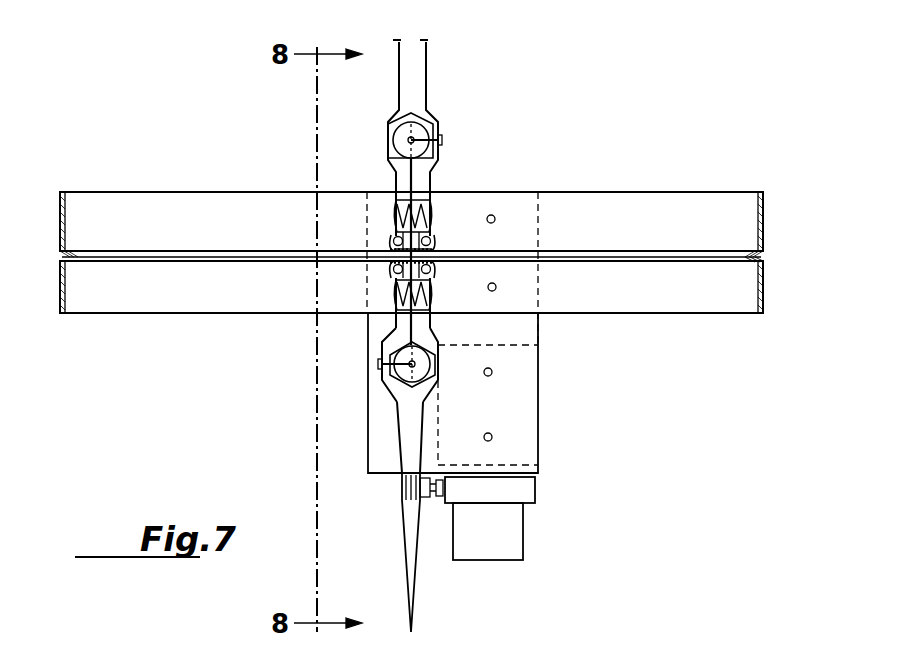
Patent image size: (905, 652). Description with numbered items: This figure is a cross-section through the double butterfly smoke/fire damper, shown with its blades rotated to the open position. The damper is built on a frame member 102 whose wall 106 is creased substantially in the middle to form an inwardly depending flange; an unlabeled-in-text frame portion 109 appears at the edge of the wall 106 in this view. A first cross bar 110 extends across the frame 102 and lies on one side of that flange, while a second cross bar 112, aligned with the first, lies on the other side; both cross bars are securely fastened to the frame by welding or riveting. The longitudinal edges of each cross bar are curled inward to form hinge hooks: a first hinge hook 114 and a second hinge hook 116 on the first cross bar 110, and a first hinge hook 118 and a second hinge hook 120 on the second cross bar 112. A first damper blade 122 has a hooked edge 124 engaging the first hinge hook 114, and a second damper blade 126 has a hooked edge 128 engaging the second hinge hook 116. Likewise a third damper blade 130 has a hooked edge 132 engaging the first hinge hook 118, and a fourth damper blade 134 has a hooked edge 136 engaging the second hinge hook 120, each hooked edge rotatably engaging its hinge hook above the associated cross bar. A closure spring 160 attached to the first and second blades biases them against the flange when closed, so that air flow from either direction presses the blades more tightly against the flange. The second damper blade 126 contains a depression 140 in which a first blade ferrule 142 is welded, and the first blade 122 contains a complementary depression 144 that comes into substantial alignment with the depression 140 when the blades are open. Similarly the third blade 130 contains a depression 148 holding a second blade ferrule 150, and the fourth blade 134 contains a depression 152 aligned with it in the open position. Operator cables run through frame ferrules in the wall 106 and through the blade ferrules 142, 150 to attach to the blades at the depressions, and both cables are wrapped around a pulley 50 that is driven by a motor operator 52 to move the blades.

The pulley 50 is at (407, 492).
The motor operator 52 is at (512, 538).
The frame member 102 is at (765, 208).
The wall 106 is at (765, 230).
The lower panel flange 109 is at (763, 266).
The first cross bar 110 is at (392, 266).
The second cross bar 112 is at (432, 247).
The first hinge hook 114 is at (392, 278).
The second hinge hook 116 is at (433, 268).
The first hinge hook 118 is at (389, 243).
The second hinge hook 120 is at (429, 246).
The first damper blade 122 is at (398, 427).
The hooked edge 124 is at (393, 284).
The second damper blade 126 is at (423, 423).
The hooked edge 128 is at (430, 285).
The third damper blade 130 is at (399, 62).
The hooked edge 132 is at (394, 220).
The fourth damper blade 134 is at (427, 68).
The hooked edge 136 is at (431, 236).
The depression 140 is at (438, 378).
The first blade ferrule 142 is at (429, 363).
The depression 144 is at (383, 377).
The depression 148 is at (388, 130).
The second blade ferrule 150 is at (393, 144).
The depression 152 is at (441, 132).
The closure spring 160 is at (396, 190).